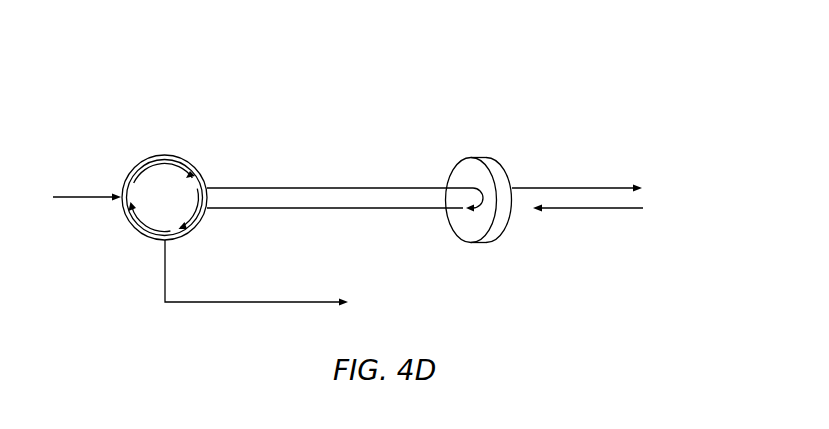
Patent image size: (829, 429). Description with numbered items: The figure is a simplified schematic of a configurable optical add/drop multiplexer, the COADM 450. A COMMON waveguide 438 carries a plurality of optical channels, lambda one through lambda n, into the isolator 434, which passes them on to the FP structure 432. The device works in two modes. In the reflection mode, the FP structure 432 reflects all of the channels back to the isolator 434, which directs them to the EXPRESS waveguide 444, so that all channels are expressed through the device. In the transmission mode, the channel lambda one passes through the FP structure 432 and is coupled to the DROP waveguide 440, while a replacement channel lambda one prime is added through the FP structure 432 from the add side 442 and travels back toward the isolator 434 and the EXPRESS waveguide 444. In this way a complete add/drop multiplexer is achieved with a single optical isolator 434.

The COADM 450 is at (387, 85).
The isolator 434 is at (165, 154).
The FP structure 432 is at (484, 158).
The COMMON waveguide 438 is at (87, 200).
The DROP waveguide 440 is at (627, 186).
The add port 442 is at (627, 212).
The EXPRESS waveguide 444 is at (163, 278).